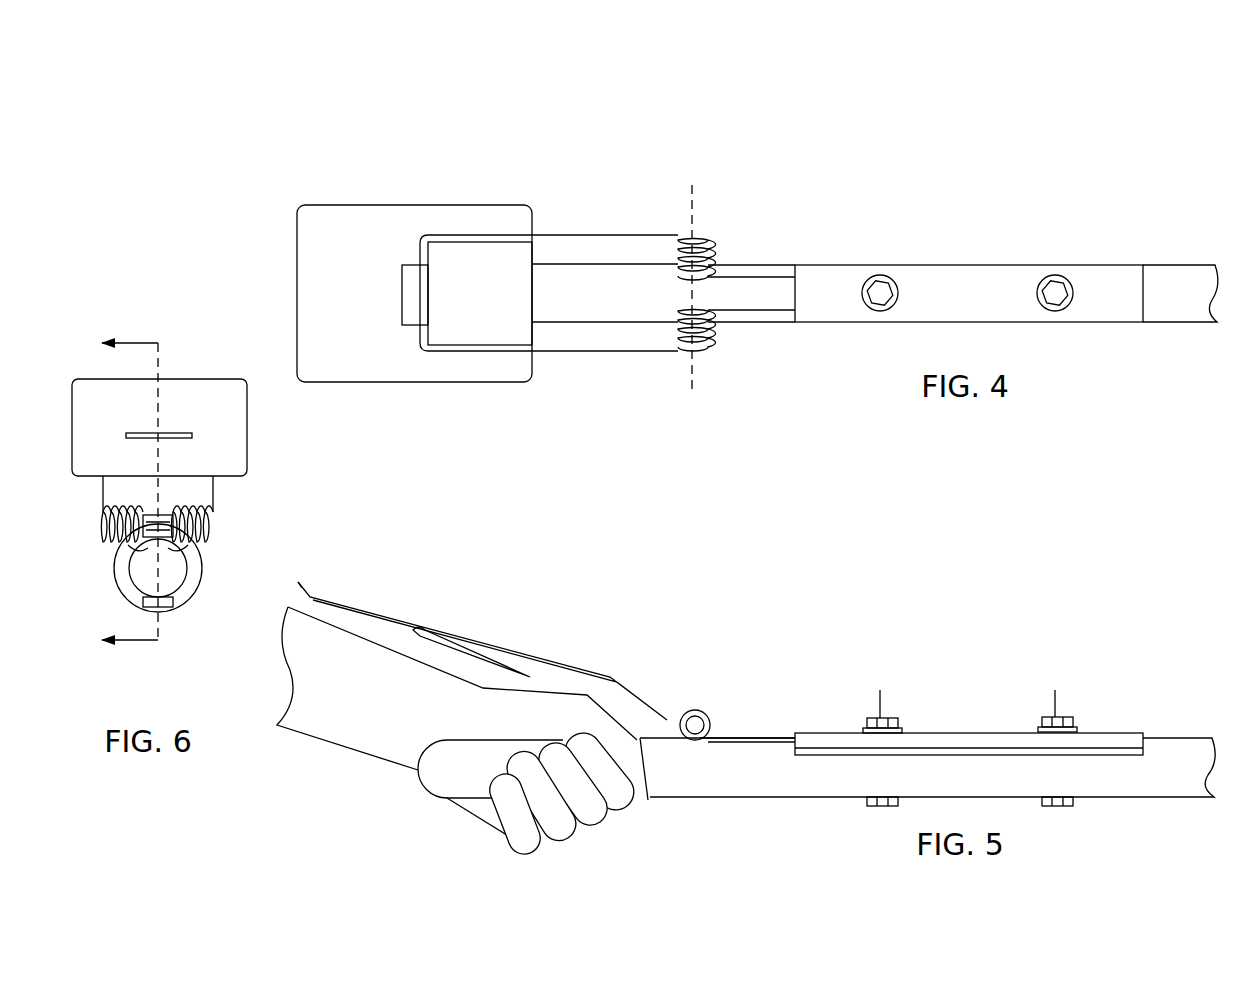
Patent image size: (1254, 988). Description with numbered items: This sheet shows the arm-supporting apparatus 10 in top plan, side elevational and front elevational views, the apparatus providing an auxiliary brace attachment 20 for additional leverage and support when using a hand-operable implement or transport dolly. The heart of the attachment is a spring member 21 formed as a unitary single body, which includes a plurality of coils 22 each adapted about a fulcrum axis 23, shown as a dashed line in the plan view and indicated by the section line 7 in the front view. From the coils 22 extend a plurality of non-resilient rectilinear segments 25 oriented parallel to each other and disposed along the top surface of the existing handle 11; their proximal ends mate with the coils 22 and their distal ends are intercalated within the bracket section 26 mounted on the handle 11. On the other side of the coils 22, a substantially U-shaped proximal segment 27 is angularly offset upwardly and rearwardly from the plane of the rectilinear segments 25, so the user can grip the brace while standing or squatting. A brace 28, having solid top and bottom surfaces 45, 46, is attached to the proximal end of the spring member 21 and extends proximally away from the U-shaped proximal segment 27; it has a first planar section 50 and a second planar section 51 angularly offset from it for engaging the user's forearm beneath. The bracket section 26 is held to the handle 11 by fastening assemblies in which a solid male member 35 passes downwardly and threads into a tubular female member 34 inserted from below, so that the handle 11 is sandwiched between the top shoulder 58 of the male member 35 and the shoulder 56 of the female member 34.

In FIG. 4, the arm-supporting apparatus 10 is at (235, 150).
In FIG. 4, the existing handle 11 is at (1175, 300).
In FIG. 5, the existing handle 11 is at (695, 782).
In FIG. 4, the auxiliary brace attachment 20 is at (654, 188).
In FIG. 5, the auxiliary brace attachment 20 is at (712, 630).
In FIG. 4, the spring member 21 is at (744, 220).
In FIG. 6, the spring member 21 is at (238, 527).
In FIG. 5, the spring member 21 is at (740, 702).
In FIG. 4, the coils 22 is at (705, 238).
In FIG. 6, the coils 22 is at (100, 543).
In FIG. 4, the fulcrum axis 23 is at (688, 394).
In FIG. 4, the rectilinear segments 25 is at (768, 270).
In FIG. 5, the rectilinear segments 25 is at (770, 735).
In FIG. 4, the bracket section 26 is at (951, 240).
In FIG. 5, the bracket section 26 is at (968, 716).
In FIG. 4, the U-shaped proximal segment 27 is at (552, 216).
In FIG. 4, the brace 28 is at (358, 183).
In FIG. 6, the brace 28 is at (196, 368).
In FIG. 5, the tubular female member 34 is at (880, 812).
In FIG. 5, the solid male member 35 is at (903, 708).
In FIG. 4, the top surface 45 is at (393, 218).
In FIG. 6, the bottom surface 46 is at (240, 423).
In FIG. 5, the first planar section 50 is at (373, 615).
In FIG. 5, the second planar section 51 is at (305, 590).
In FIG. 5, the shoulder 56 is at (868, 806).
In FIG. 5, the top shoulder 58 is at (1122, 700).
In FIG. 6, the section line 7- 7 is at (117, 493).